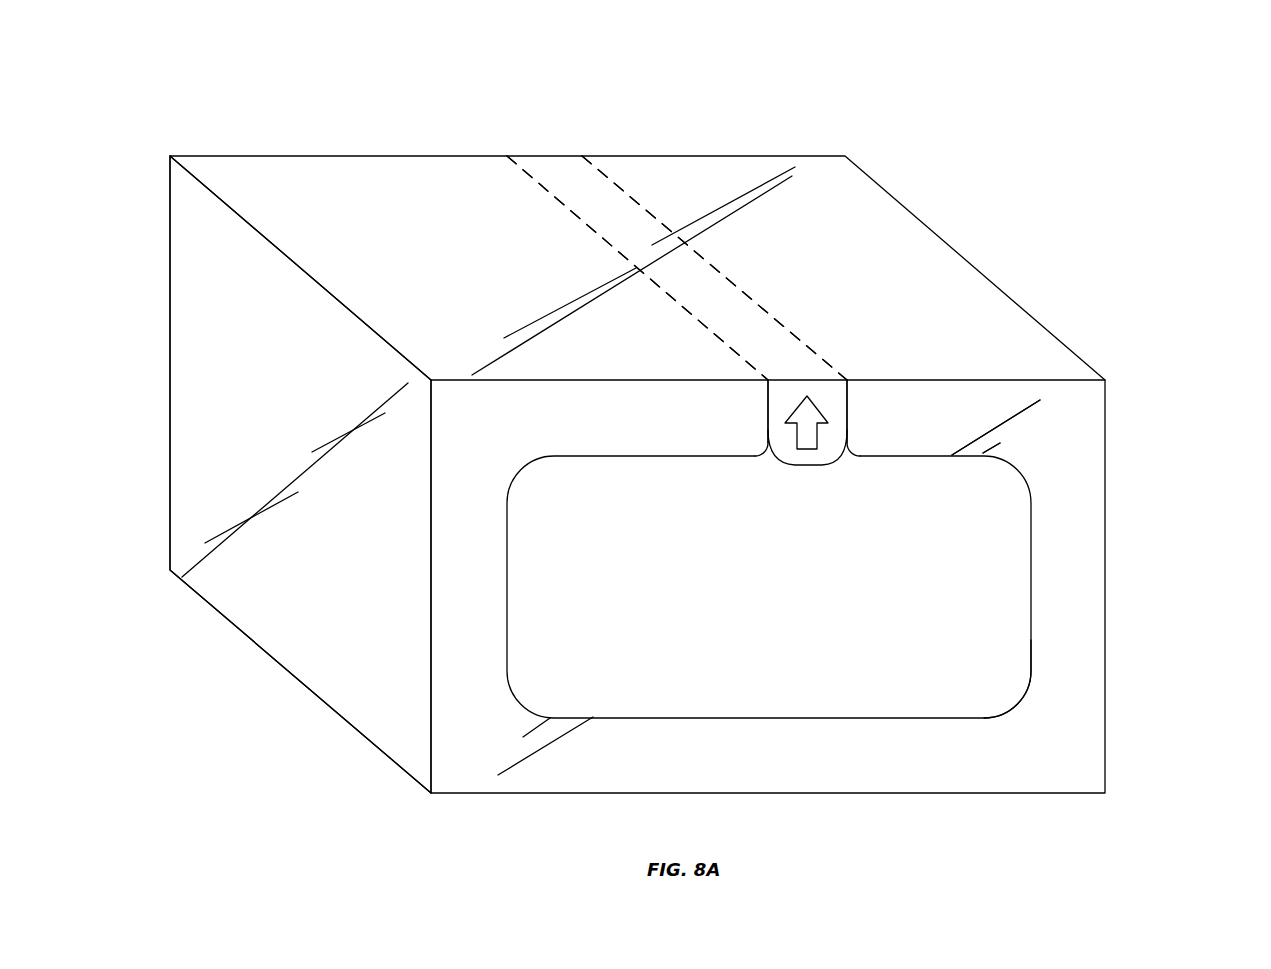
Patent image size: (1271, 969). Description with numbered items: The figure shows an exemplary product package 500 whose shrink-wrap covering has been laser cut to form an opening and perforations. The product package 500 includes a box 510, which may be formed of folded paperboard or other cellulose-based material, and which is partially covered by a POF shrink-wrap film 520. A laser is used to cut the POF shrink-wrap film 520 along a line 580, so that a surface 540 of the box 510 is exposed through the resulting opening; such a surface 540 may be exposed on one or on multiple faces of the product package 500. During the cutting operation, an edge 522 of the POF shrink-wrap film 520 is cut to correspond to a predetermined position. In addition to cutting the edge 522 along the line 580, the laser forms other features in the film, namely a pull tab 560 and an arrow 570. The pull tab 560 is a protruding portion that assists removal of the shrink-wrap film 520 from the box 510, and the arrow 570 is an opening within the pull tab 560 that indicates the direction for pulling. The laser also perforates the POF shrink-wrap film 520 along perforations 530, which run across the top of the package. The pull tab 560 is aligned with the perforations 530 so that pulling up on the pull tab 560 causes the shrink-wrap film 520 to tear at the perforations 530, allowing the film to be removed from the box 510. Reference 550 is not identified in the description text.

The product package 500 is at (1143, 156).
The box 510 is at (340, 713).
The POF shrink-wrap film 520 is at (310, 582).
The edge 522 is at (508, 606).
The perforations 530 is at (600, 170).
The surface 540 is at (953, 588).
The tear strip 550 is at (623, 217).
The pull tab 560 is at (816, 398).
The arrow 570 is at (818, 413).
The line 580 is at (1031, 668).